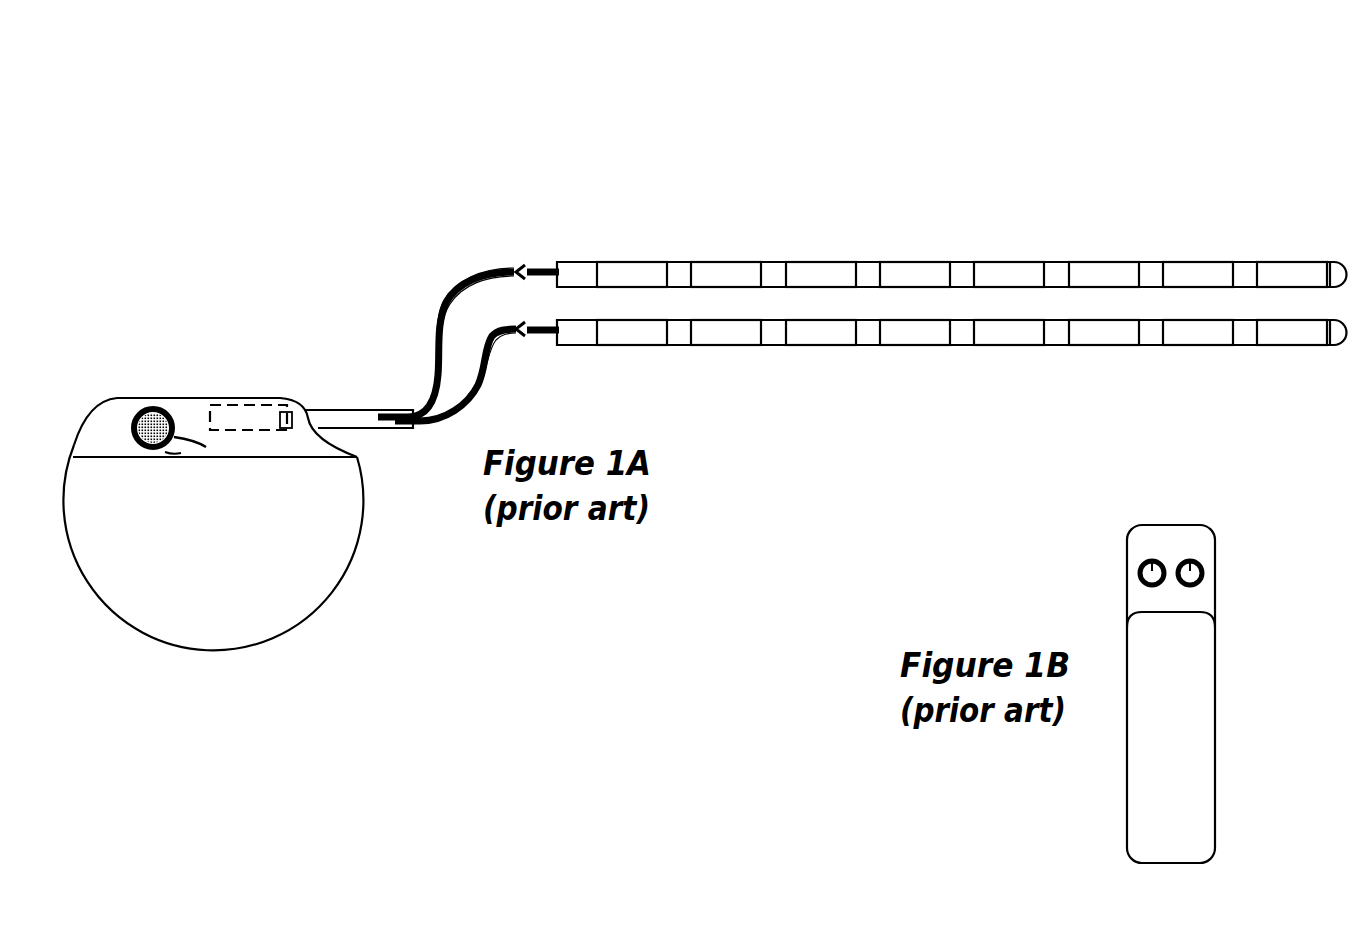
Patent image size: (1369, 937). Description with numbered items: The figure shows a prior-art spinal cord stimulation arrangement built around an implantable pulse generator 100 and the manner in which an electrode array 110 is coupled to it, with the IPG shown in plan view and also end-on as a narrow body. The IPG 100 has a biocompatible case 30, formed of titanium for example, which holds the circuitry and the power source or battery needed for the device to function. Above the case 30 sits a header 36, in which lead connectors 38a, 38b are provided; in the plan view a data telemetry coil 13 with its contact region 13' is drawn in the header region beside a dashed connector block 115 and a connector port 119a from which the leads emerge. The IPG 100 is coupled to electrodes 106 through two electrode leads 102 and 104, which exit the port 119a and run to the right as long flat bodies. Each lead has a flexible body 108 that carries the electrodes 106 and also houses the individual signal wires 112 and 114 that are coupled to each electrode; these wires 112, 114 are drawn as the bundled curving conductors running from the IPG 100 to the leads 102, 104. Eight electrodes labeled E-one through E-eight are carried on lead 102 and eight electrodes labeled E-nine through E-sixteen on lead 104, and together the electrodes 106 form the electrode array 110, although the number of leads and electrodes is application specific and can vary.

In FIG. 1A, the implantable pulse generator 100 is at (171, 301).
In FIG. 1B, the implantable pulse generator 100 is at (1168, 503).
In FIG. 1A, the case 30 is at (368, 517).
In FIG. 1B, the case 30 is at (1215, 645).
In FIG. 1A, the header 36 is at (101, 412).
In FIG. 1B, the header 36 is at (1215, 587).
In FIG. 1A, the lead connector 38a is at (238, 403).
In FIG. 1B, the lead connector 38a is at (1149, 560).
In FIG. 1B, the lead connector 38b is at (1193, 560).
In FIG. 1A, the data telemetry coil 13 is at (153, 461).
In FIG. 1A, the electrode contact 13' is at (141, 409).
In FIG. 1A, the connector block 115 is at (268, 368).
In FIG. 1A, the lead connector port 119a is at (287, 404).
In FIG. 1A, the electrode lead 102 is at (613, 238).
In FIG. 1A, the electrode lead 104 is at (656, 373).
In FIG. 1A, the electrodes 106 is at (822, 262).
In FIG. 1A, the flexible body 108 is at (677, 262).
In FIG. 1A, the electrode array 110 is at (1083, 164).
In FIG. 1A, the signal wires 112 is at (455, 283).
In FIG. 1A, the signal wires 114 is at (500, 354).